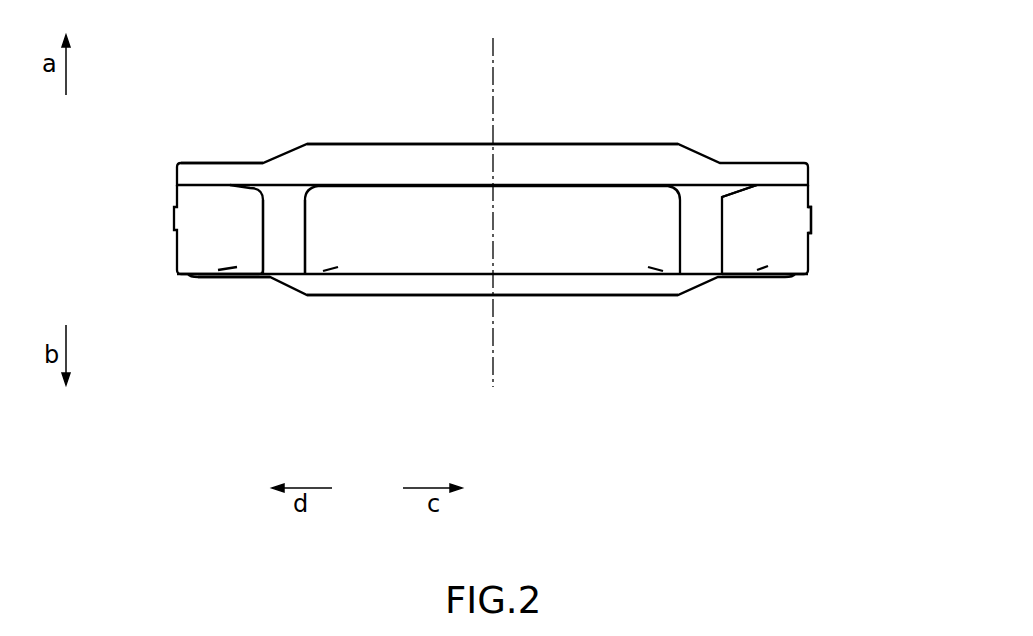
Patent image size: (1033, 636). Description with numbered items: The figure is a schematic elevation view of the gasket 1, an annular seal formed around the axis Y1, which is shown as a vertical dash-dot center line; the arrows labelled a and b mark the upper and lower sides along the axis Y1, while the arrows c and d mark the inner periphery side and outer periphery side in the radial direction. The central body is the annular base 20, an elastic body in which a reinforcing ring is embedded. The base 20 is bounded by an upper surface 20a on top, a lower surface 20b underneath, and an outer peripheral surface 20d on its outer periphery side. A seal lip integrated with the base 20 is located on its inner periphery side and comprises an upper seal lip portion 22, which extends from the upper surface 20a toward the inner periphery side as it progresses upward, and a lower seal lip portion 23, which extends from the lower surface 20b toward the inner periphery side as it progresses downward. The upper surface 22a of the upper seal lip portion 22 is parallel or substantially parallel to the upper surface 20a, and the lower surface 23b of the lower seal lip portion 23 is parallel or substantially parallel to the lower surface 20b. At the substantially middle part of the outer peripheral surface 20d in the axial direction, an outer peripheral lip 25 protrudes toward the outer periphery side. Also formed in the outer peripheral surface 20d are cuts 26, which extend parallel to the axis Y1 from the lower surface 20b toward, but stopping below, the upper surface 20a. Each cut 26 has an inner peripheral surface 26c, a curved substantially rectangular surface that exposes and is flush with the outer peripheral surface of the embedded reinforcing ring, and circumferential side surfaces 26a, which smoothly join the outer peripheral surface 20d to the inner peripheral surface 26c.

The gasket 1 is at (835, 92).
The base 20 is at (198, 243).
The upper surface 20a is at (210, 163).
The lower surface 20b is at (205, 277).
The outer peripheral surface 20d is at (420, 247).
The upper seal lip portion 22 is at (492, 114).
The upper surface 22a is at (630, 144).
The lower seal lip portion 23 is at (720, 302).
The lower surface 23b is at (635, 298).
The outer peripheral lip 25 is at (810, 218).
The cut 26 is at (703, 249).
The side surface 26a is at (265, 250).
The inner peripheral surface 26c is at (708, 218).
The axis Y1 is at (495, 50).